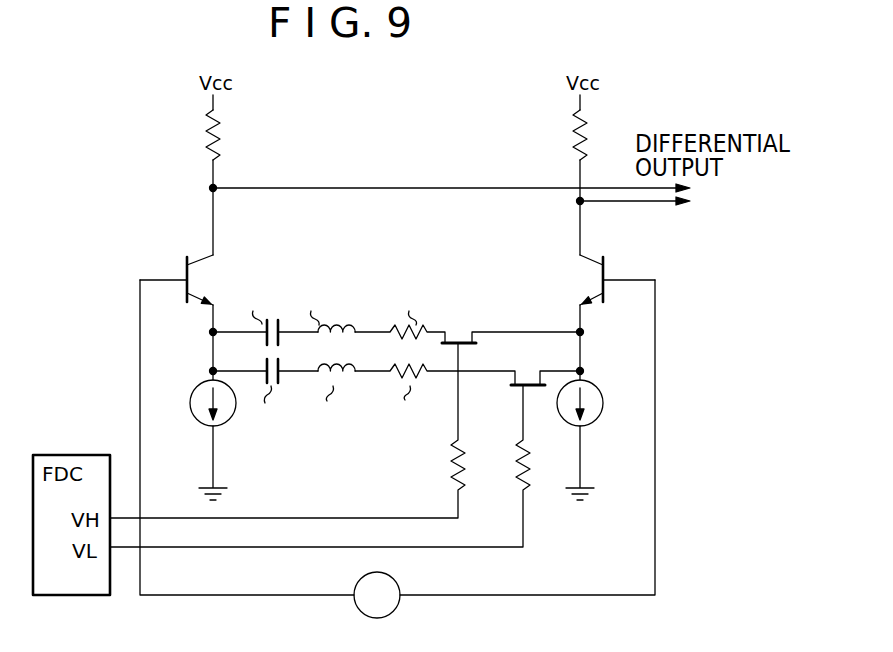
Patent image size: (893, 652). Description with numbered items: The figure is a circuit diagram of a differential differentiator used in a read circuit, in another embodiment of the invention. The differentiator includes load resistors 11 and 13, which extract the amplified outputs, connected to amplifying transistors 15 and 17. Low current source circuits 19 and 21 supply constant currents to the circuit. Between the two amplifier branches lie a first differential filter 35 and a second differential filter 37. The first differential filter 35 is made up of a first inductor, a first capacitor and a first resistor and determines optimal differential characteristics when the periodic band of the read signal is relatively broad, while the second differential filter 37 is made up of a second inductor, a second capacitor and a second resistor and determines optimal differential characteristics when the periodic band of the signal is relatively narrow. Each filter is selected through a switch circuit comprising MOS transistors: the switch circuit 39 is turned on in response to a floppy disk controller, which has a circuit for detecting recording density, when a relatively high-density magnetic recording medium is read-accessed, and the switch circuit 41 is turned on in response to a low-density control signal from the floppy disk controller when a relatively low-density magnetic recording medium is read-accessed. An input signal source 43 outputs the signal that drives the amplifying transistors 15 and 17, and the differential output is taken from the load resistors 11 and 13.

The load resistor 11 is at (220, 130).
The load resistor 13 is at (571, 145).
The amplifying transistor 15 is at (208, 283).
The amplifying transistor 17 is at (588, 282).
The low current source circuit 19 is at (229, 419).
The low current source circuit 21 is at (610, 369).
The first differential filter 35 is at (350, 326).
The second differential filter 37 is at (368, 378).
The switch circuit 39 is at (460, 340).
The switch circuit 41 is at (506, 394).
The input signal source 43 is at (398, 584).